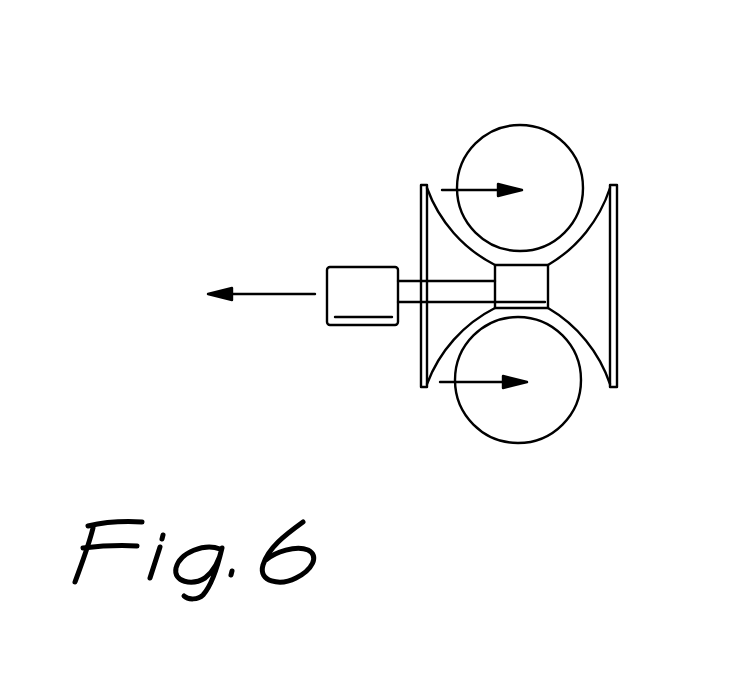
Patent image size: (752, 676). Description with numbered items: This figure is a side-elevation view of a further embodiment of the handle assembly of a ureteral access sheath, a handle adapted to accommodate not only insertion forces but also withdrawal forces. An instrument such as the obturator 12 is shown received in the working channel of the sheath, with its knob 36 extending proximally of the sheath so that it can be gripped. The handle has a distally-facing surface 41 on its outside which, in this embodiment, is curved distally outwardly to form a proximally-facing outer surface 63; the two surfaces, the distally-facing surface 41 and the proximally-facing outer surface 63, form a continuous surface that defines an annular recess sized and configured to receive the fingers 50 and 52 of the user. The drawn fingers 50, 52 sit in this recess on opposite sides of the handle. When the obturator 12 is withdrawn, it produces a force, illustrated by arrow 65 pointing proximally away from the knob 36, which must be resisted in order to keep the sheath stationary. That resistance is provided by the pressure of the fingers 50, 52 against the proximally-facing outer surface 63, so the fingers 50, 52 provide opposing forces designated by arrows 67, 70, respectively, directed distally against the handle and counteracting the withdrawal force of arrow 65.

The obturator 12 is at (410, 301).
The knob 36 is at (350, 272).
The distally-facing surface 41 is at (433, 186).
The finger 50 is at (535, 148).
The finger 52 is at (533, 422).
The proximally-facing outer surface 63 is at (602, 212).
The arrow 65 is at (270, 295).
The arrow 67 is at (483, 187).
The arrow 70 is at (473, 383).